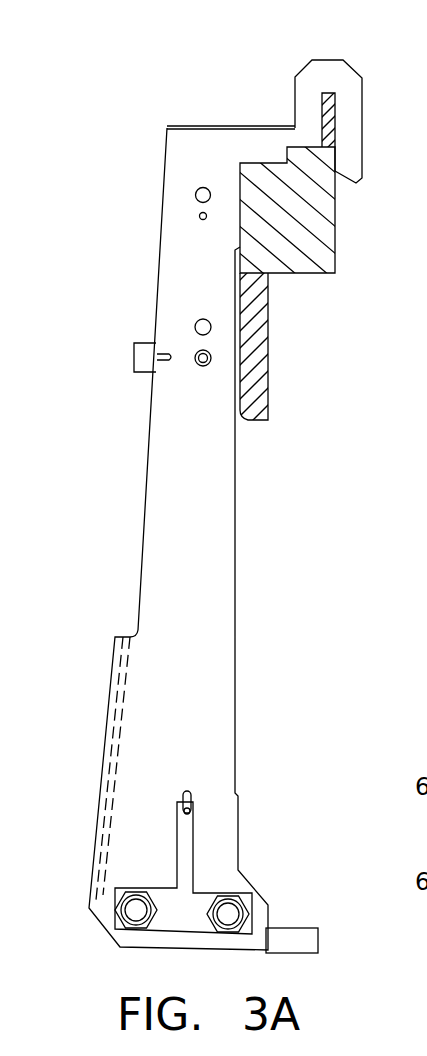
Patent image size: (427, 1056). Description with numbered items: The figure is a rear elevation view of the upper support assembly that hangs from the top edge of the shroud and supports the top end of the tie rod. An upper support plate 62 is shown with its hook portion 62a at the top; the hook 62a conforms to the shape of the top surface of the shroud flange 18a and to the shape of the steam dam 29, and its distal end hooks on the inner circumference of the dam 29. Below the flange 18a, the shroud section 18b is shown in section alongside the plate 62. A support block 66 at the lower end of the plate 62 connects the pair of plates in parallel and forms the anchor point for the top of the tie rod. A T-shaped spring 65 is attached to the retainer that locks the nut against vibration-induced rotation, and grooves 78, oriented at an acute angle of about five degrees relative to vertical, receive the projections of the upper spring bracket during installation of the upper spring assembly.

The upper support plate segments 62 is at (159, 262).
The hook portions 62a is at (328, 60).
The steam dam 29 is at (330, 120).
The shroud flange 18a is at (312, 217).
The lower frame member 18b is at (272, 347).
The grooves 78 is at (110, 717).
The T-shaped spring 65 is at (186, 852).
The support block 66 is at (298, 928).